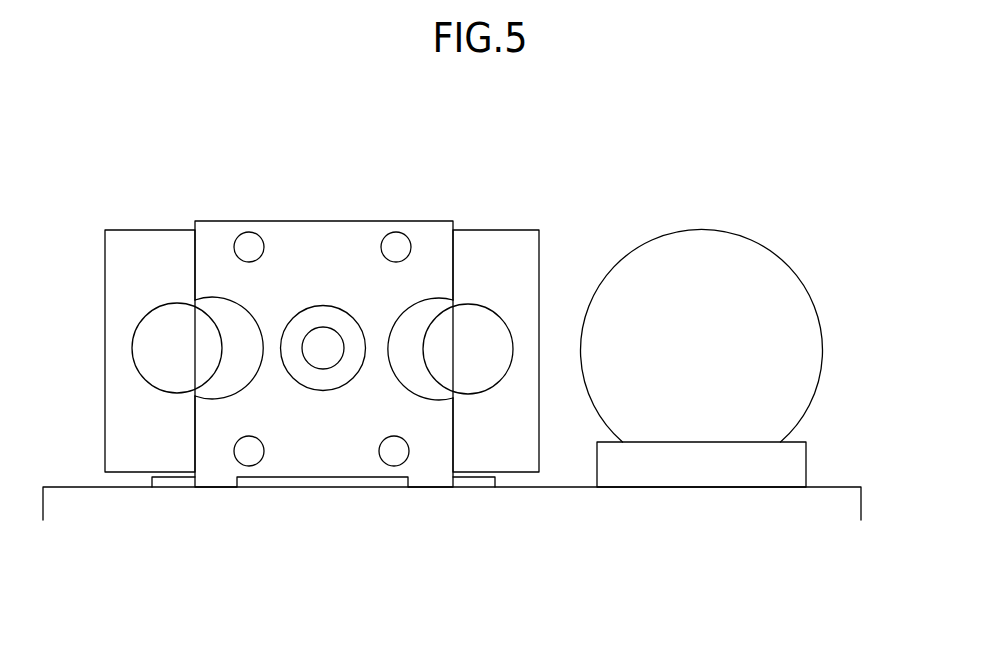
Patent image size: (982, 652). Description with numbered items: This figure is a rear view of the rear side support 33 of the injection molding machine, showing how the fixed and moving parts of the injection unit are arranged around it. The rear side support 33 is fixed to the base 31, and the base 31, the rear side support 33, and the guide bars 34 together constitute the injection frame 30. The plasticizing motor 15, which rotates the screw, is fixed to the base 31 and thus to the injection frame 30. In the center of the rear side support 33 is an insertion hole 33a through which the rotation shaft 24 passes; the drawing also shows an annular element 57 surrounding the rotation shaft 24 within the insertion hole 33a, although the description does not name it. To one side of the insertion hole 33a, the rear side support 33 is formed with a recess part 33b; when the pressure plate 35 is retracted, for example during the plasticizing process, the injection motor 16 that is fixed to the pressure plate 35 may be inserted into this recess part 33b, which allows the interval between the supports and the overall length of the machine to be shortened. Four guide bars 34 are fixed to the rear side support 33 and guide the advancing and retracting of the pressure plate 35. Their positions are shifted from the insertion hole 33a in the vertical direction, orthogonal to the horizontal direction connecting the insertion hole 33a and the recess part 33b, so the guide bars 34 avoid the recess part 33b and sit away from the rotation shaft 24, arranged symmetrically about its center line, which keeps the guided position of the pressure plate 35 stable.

The plasticizing motor 15 is at (701, 240).
The injection motor 16 is at (160, 312).
The rotation shaft 24 is at (323, 360).
The injection frame 30 is at (846, 479).
The base 31 is at (851, 503).
The rear side support 33 is at (340, 238).
The insertion hole 33a is at (298, 310).
The recess part 33b is at (210, 395).
The guide bar 34 is at (248, 238).
The pressure plate 35 is at (150, 238).
The bearing 57 is at (315, 363).